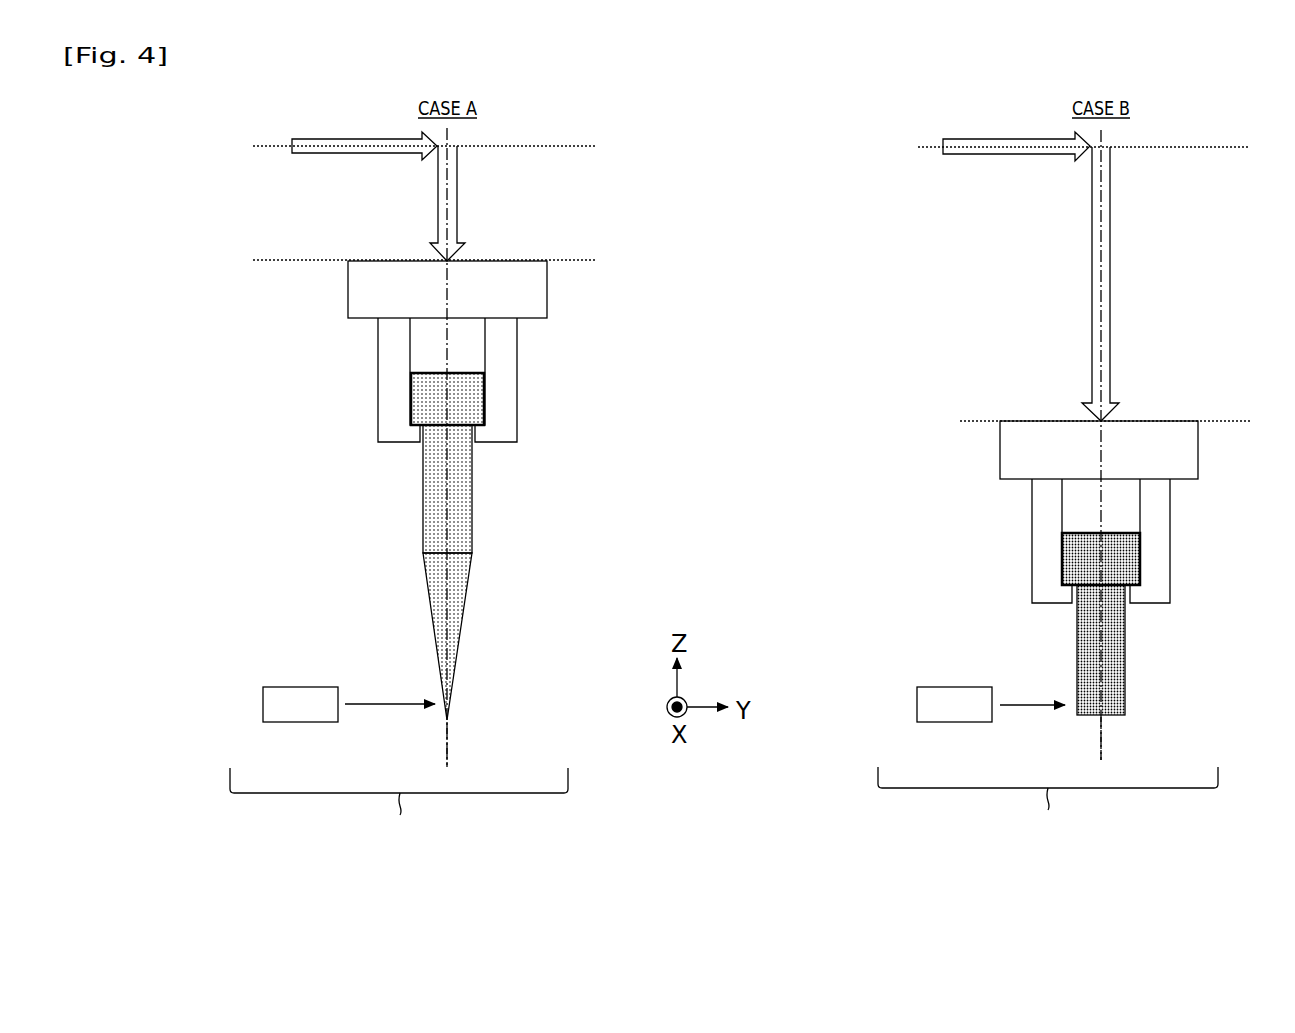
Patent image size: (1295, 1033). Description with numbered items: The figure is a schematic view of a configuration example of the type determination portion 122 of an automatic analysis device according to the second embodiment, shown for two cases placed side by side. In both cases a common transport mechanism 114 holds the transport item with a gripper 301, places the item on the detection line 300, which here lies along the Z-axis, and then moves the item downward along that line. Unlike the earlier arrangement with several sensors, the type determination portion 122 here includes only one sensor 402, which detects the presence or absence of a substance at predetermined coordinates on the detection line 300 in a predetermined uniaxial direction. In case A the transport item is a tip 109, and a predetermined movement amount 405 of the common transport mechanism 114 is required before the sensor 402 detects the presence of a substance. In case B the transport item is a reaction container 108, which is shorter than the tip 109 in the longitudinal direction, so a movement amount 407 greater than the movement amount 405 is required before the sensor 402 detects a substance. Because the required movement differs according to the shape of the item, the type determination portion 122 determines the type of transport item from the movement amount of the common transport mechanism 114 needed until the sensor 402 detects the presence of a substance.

The movement amount 405 is at (438, 215).
The movement amount 407 is at (1092, 290).
The common transport mechanism 114 is at (330, 301).
The gripper 301 is at (378, 352).
The tip 109 is at (472, 535).
The reaction container 108 is at (1125, 690).
The sensor 402 is at (263, 703).
The detection line 300 is at (450, 750).
The type determination portion 122 is at (751, 812).